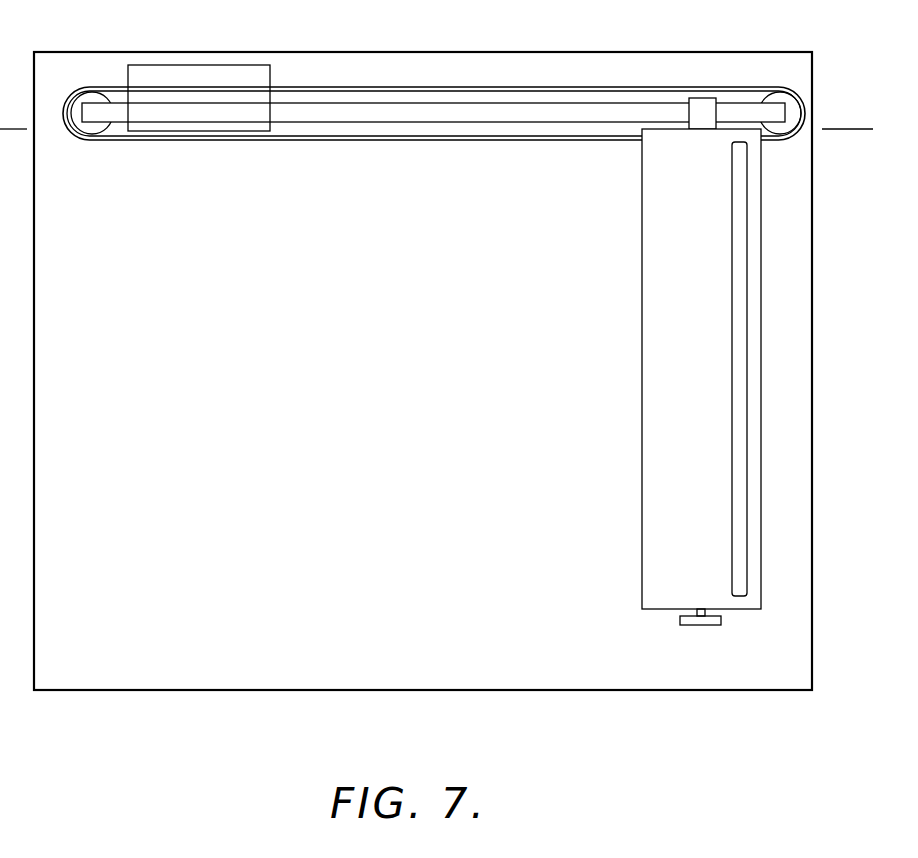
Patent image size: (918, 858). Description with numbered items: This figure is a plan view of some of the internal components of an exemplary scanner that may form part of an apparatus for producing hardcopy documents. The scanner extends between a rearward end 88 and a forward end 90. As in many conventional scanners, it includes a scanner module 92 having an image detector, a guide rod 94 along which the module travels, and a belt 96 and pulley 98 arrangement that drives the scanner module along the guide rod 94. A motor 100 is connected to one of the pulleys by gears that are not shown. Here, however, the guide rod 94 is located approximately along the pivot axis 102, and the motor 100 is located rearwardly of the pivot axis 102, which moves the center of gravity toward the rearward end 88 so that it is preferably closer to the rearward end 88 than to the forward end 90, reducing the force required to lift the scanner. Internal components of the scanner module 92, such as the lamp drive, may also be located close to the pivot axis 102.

The rearward end 88 is at (628, 52).
The forward end 90 is at (617, 690).
The scanner module 92 is at (642, 552).
The guide rod 94 is at (613, 118).
The belt 96 is at (580, 87).
The pulley 98 is at (792, 101).
The motor 100 is at (205, 68).
The pivot axis 102 is at (840, 132).